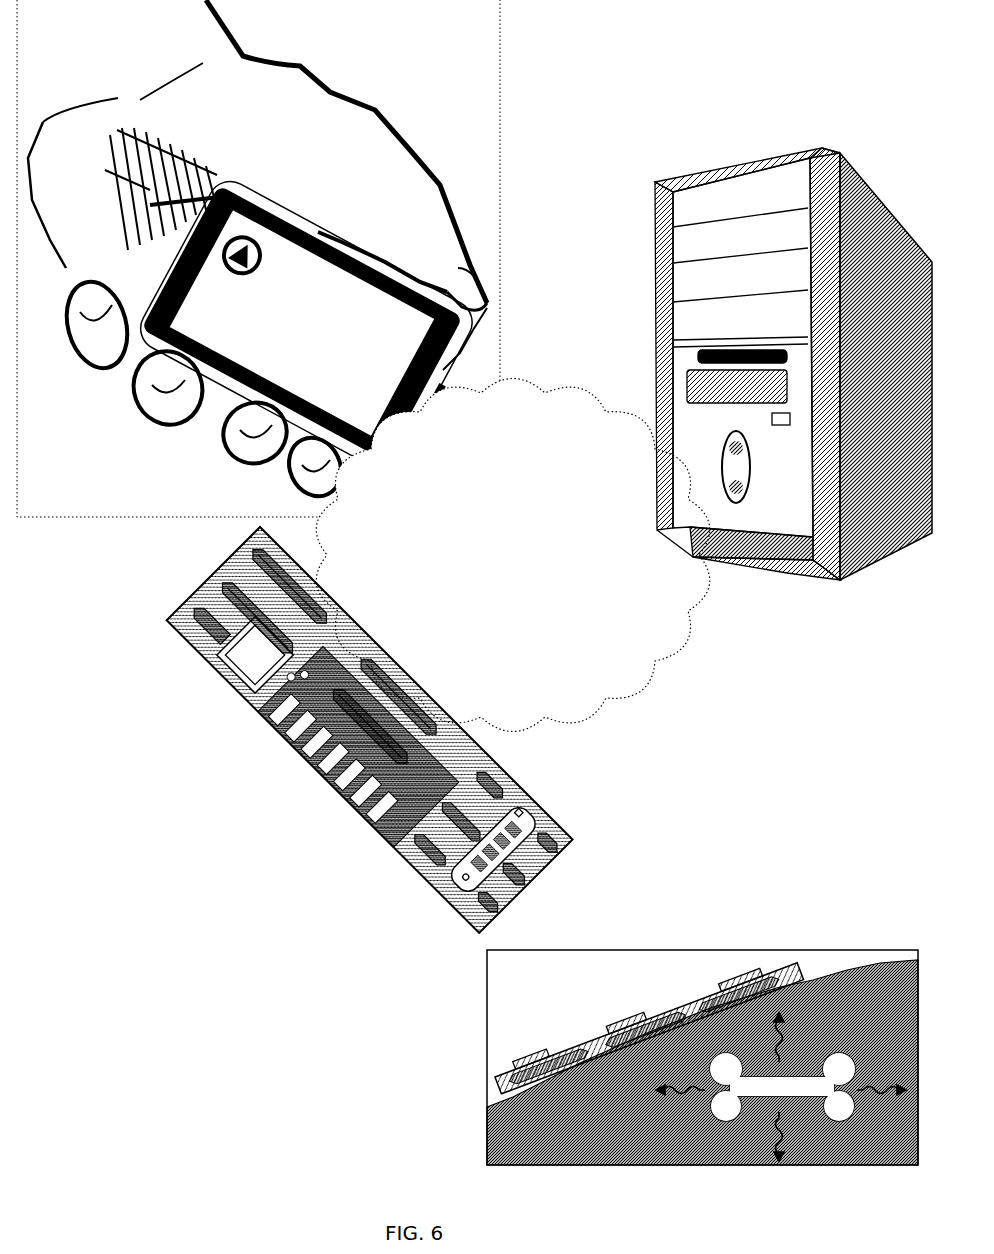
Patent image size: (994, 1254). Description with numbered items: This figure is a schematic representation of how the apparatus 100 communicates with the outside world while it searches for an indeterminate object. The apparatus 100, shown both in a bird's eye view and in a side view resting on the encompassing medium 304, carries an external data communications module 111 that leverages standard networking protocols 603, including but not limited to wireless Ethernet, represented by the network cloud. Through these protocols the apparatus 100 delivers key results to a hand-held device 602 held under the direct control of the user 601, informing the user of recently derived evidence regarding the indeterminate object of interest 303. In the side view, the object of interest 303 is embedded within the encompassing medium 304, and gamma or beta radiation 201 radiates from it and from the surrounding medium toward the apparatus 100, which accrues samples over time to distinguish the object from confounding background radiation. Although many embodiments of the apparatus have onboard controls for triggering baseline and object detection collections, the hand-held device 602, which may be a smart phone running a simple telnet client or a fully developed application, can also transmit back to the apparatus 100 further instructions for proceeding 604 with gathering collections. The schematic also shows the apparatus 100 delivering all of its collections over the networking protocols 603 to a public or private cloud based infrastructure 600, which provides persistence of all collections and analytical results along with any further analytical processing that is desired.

The cloud based infrastructure 600 is at (657, 182).
The user 601 is at (223, 408).
The hand-held device 602 is at (443, 367).
The standard networking protocols 603 is at (615, 592).
The further instructions for proceeding 604 is at (312, 230).
The apparatus 100 is at (632, 1010).
The external data communications module 111 is at (473, 862).
The indeterminate object of interest 303 is at (818, 1085).
The gamma or beta radiation 201 is at (873, 1077).
The encompassing medium 304 is at (530, 1120).